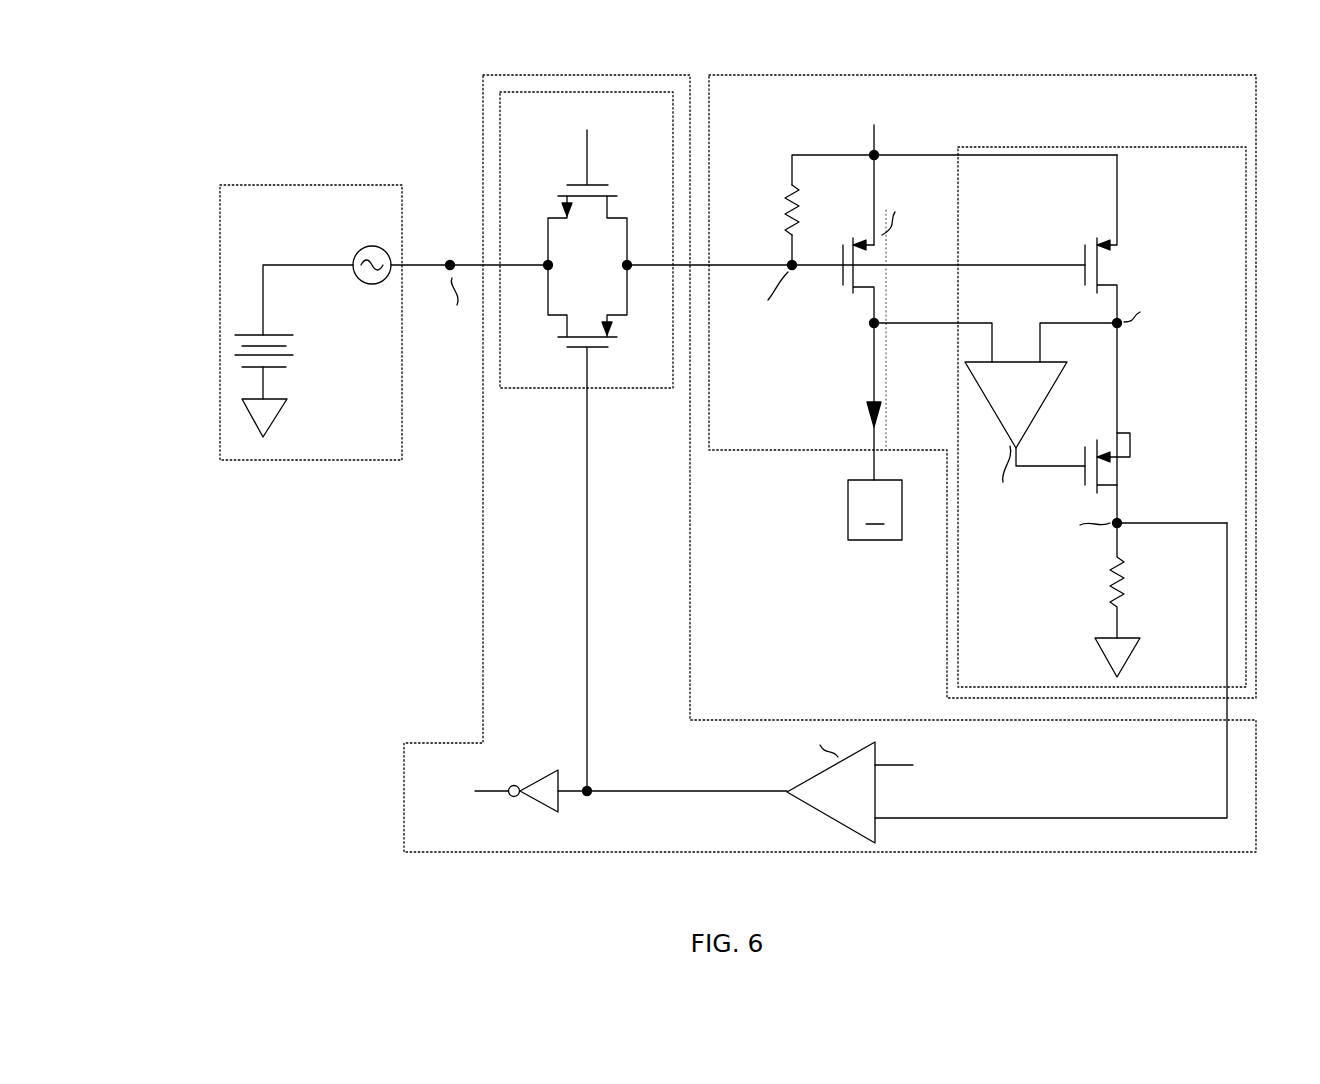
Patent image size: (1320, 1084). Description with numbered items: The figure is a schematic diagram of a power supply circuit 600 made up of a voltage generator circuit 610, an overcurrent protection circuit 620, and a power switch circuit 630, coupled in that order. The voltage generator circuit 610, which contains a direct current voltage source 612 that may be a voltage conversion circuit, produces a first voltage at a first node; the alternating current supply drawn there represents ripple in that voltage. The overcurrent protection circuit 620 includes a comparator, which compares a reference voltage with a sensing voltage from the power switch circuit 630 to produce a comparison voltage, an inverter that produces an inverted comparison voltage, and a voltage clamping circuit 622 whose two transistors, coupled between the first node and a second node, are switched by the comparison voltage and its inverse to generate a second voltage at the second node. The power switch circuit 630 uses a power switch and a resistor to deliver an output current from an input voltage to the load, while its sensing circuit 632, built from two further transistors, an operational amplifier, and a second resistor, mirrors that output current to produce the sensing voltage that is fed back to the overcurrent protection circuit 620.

The power supply circuit 600 is at (148, 75).
The voltage generator circuit 610 is at (285, 462).
The direct current (DC) voltage source 612 is at (292, 386).
The overcurrent protection circuit 620 is at (404, 748).
The voltage clamping circuit 622 is at (527, 392).
The power switch circuit 630 is at (947, 600).
The sensing circuit 632 is at (958, 632).